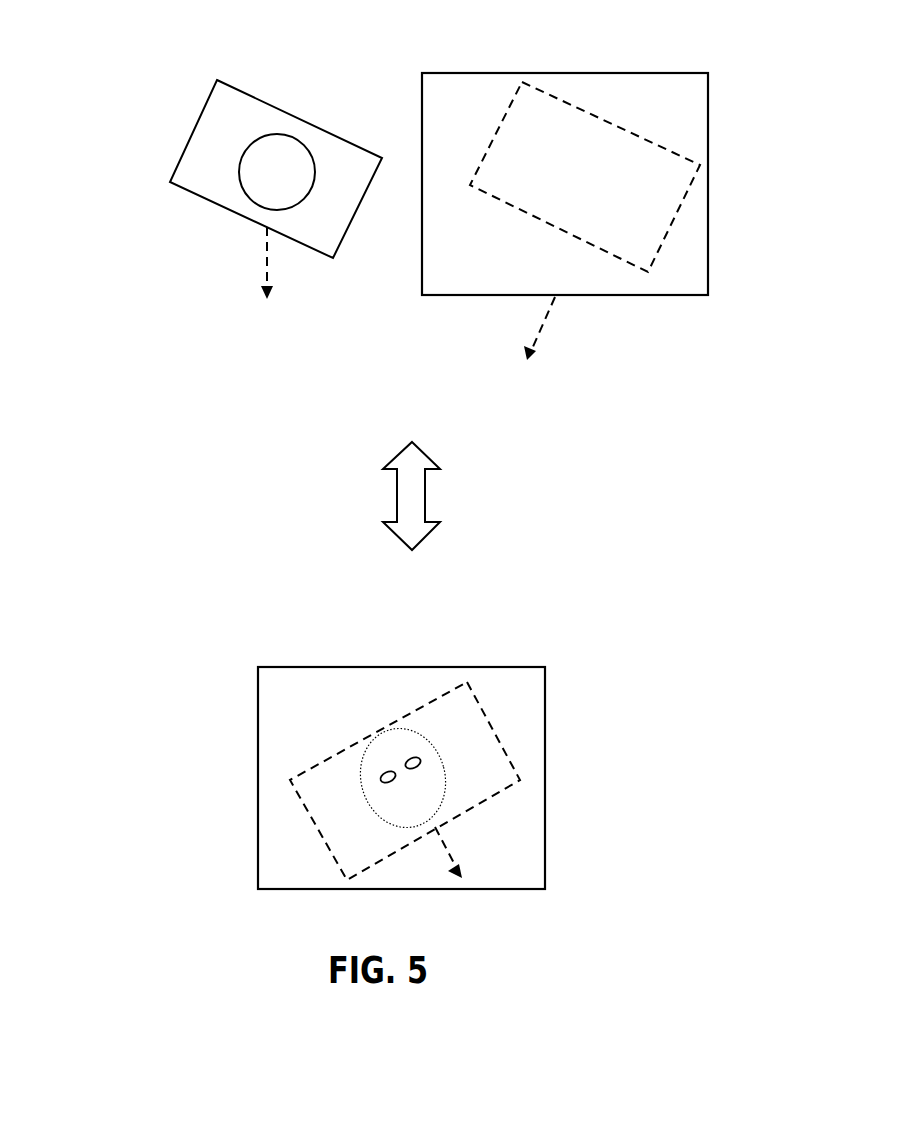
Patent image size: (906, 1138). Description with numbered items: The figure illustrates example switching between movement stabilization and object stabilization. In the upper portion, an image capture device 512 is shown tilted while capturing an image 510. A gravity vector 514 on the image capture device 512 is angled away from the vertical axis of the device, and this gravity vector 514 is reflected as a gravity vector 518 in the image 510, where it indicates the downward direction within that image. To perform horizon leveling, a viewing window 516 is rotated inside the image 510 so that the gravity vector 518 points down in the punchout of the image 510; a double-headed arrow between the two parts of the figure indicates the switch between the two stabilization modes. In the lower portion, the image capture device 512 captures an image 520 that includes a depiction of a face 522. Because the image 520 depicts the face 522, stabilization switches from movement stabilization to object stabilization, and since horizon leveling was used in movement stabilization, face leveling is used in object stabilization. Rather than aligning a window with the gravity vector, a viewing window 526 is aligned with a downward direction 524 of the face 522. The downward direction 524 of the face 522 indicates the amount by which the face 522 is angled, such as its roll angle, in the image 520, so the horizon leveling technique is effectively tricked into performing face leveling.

The image 510 is at (586, 57).
The image capture device 512 is at (195, 127).
The gravity vector 514 is at (235, 263).
The viewing window 516 is at (630, 132).
The gravity vector 518 is at (564, 328).
The image 520 is at (405, 655).
The face 522 is at (417, 737).
The downward direction 524 is at (472, 852).
The viewing window 526 is at (507, 748).